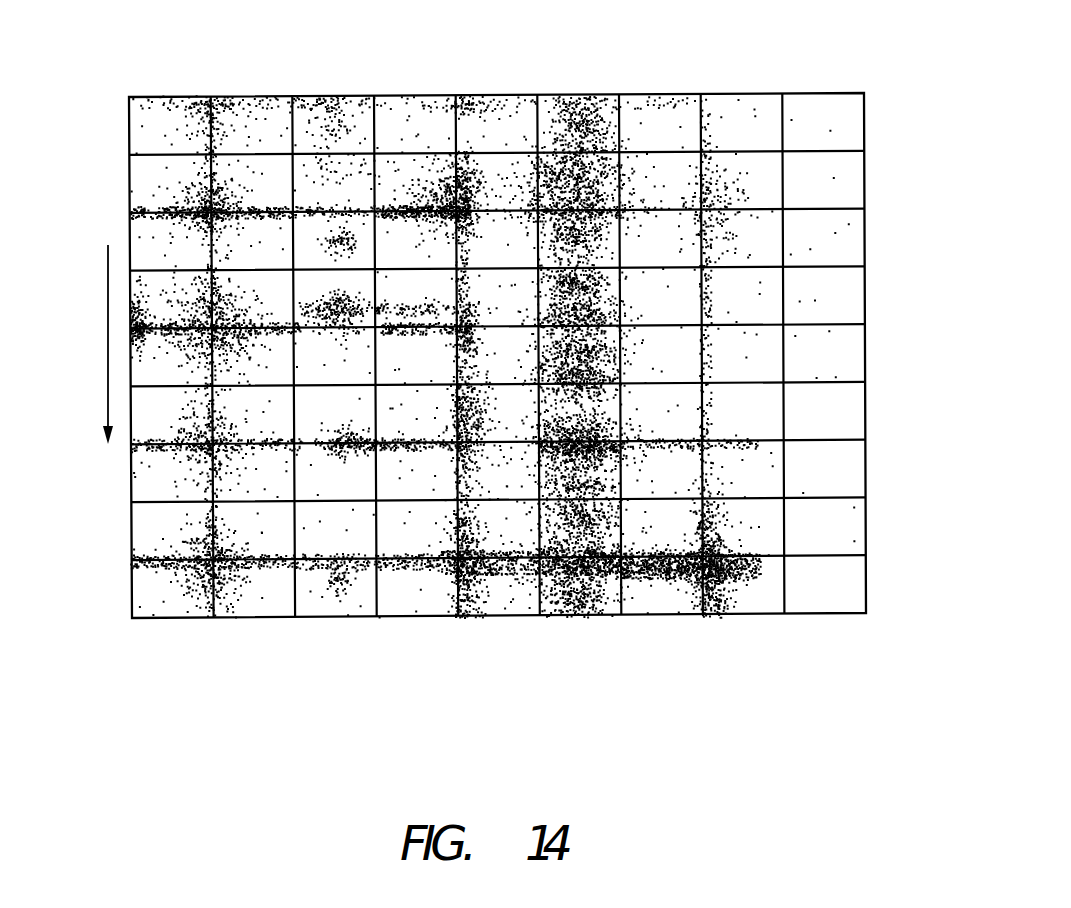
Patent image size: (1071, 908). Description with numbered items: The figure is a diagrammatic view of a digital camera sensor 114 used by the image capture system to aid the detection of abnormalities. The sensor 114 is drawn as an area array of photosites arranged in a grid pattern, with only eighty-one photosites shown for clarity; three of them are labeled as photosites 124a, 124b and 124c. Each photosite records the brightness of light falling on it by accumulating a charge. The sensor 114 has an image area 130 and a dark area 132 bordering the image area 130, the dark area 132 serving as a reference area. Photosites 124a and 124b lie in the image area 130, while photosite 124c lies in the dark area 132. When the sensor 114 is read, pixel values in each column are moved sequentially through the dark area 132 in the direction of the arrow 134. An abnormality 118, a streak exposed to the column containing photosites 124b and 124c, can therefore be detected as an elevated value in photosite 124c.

The sensor 114 is at (865, 232).
The dark area 132 is at (865, 523).
The abnormality 118 is at (505, 233).
The photosite 124a is at (310, 542).
The photosite 124b is at (490, 410).
The photosite 124c is at (503, 597).
The image area 130 is at (754, 533).
The arrow 134 is at (106, 337).